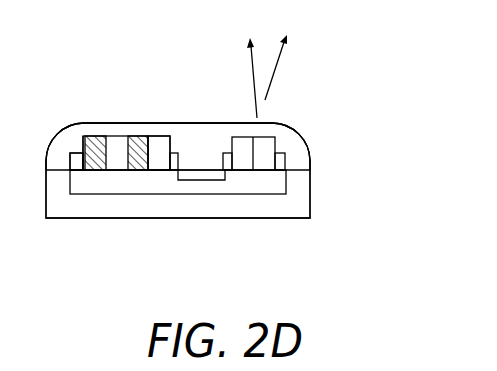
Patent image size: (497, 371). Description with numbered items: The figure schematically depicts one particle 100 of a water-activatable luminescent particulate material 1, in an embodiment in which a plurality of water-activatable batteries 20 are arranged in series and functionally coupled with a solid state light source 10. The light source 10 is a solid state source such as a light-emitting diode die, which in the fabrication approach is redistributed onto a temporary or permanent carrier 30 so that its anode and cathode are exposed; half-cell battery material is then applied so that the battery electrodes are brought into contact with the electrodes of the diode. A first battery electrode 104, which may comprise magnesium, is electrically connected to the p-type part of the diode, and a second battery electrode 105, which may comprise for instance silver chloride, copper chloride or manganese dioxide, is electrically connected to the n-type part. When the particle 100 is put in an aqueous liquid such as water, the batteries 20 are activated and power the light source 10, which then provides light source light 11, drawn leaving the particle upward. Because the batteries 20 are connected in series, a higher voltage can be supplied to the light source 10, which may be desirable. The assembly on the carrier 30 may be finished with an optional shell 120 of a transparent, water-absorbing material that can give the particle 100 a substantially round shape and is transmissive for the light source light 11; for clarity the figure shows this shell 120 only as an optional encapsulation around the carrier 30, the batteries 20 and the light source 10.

The water-activatable luminescent particulate material 1 is at (378, 178).
The solid state light source 10 is at (273, 118).
The light source light 11 is at (278, 60).
The water-activatable battery 20 is at (126, 117).
The carrier 30 is at (127, 213).
The particle 100 is at (296, 238).
The first battery electrode 104 is at (82, 136).
The second battery electrode 105 is at (158, 140).
The shell 120 is at (331, 114).